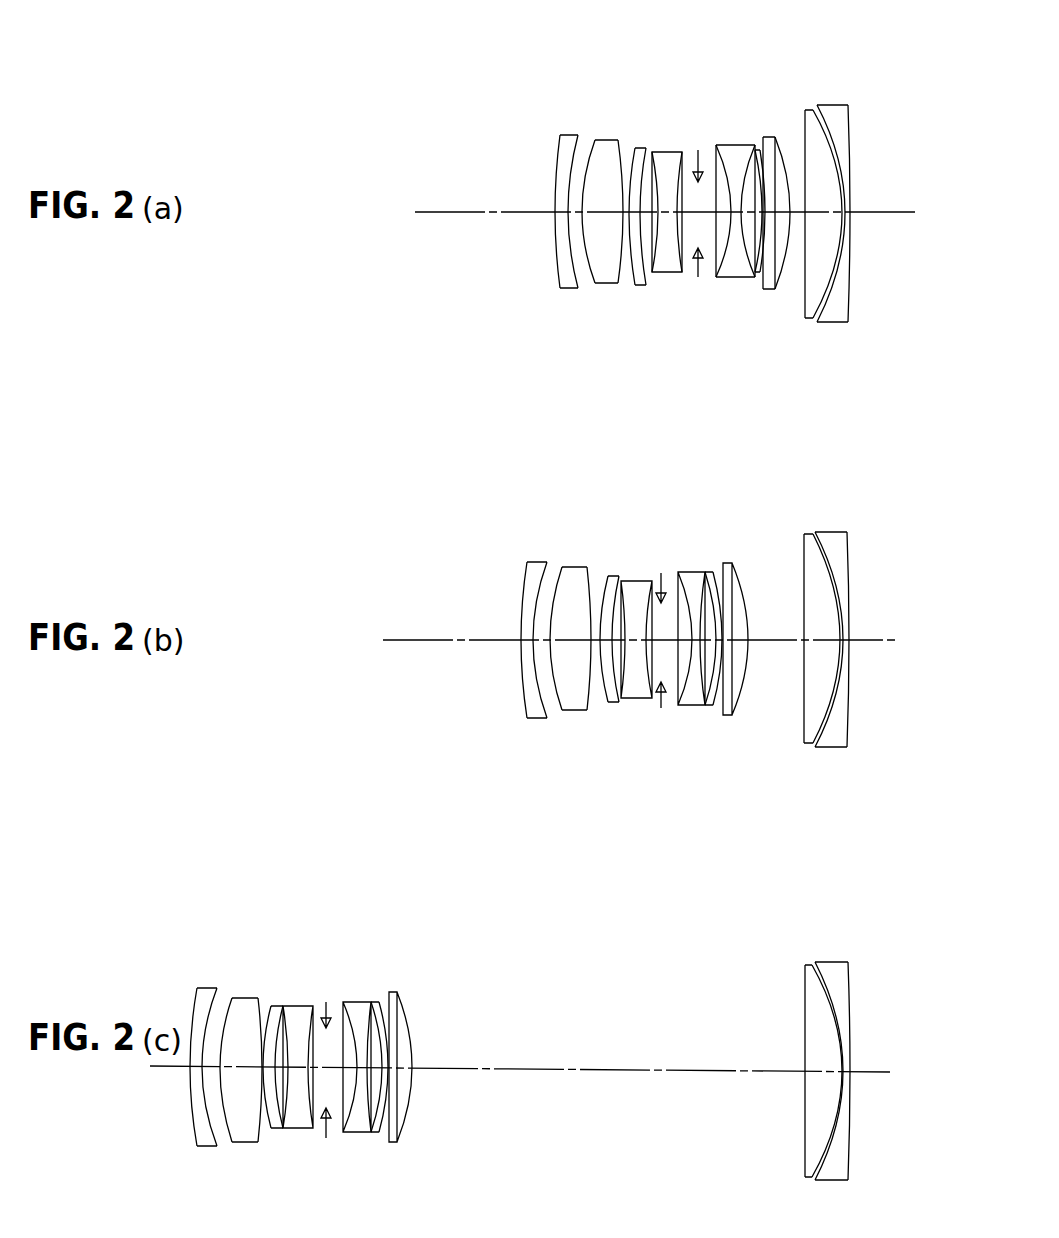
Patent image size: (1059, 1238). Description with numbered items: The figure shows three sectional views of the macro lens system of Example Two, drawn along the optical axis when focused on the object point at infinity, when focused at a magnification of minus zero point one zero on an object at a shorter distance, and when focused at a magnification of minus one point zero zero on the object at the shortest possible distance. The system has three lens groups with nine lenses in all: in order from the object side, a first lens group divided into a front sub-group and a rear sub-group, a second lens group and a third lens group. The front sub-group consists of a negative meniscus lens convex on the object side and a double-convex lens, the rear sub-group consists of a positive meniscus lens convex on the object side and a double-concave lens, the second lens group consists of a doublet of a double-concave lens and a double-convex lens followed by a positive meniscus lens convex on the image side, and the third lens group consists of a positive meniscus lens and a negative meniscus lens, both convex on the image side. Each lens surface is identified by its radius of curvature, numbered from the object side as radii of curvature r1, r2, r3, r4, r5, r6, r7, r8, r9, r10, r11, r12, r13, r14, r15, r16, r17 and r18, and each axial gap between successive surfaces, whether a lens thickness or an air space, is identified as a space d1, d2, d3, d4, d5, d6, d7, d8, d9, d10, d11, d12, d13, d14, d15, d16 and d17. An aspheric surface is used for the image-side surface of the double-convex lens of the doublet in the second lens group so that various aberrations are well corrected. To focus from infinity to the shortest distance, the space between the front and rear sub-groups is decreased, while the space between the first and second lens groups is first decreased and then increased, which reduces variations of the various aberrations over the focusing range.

The radius of curvature r1 is at (557, 148).
The radius of curvature r2 is at (576, 152).
The radius of curvature r3 is at (587, 152).
The radius of curvature r4 is at (620, 155).
The radius of curvature r5 is at (633, 160).
The radius of curvature r6 is at (645, 160).
The radius of curvature r7 is at (655, 165).
The radius of curvature r8 is at (681, 165).
The radius of curvature r9 is at (720, 165).
The radius of curvature r10 is at (745, 165).
The radius of curvature r11 is at (757, 165).
The radius of curvature r12 is at (762, 165).
The radius of curvature r13 is at (764, 170).
The radius of curvature r14 is at (784, 170).
The radius of curvature r15 is at (806, 160).
The radius of curvature r16 is at (822, 160).
The radius of curvature r17 is at (835, 155).
The radius of curvature r18 is at (850, 160).
The space between lens surfaces d1 is at (556, 228).
The space between lens surfaces d2 is at (580, 284).
The space between lens surfaces d3 is at (603, 231).
The space between lens surfaces d4 is at (621, 282).
The space between lens surfaces d5 is at (641, 283).
The space between lens surfaces d6 is at (660, 283).
The space between lens surfaces d7 is at (673, 270).
The space between lens surfaces d8 is at (696, 233).
The space between lens surfaces d9 is at (718, 274).
The space between lens surfaces d10 is at (733, 278).
The space between lens surfaces d11 is at (756, 275).
The space between lens surfaces d12 is at (759, 288).
The space between lens surfaces d13 is at (768, 280).
The space between lens surfaces d14 is at (798, 285).
The space between lens surfaces d15 is at (820, 315).
The space between lens surfaces d16 is at (846, 292).
The space between lens surfaces d17 is at (849, 225).